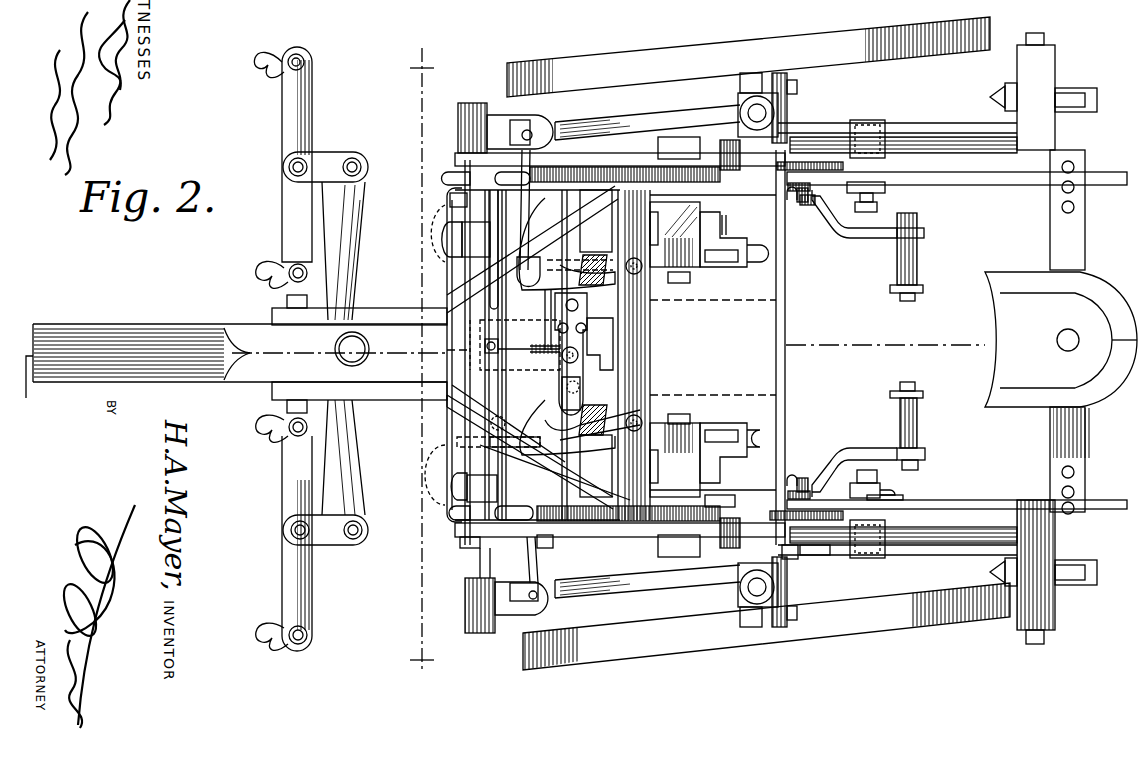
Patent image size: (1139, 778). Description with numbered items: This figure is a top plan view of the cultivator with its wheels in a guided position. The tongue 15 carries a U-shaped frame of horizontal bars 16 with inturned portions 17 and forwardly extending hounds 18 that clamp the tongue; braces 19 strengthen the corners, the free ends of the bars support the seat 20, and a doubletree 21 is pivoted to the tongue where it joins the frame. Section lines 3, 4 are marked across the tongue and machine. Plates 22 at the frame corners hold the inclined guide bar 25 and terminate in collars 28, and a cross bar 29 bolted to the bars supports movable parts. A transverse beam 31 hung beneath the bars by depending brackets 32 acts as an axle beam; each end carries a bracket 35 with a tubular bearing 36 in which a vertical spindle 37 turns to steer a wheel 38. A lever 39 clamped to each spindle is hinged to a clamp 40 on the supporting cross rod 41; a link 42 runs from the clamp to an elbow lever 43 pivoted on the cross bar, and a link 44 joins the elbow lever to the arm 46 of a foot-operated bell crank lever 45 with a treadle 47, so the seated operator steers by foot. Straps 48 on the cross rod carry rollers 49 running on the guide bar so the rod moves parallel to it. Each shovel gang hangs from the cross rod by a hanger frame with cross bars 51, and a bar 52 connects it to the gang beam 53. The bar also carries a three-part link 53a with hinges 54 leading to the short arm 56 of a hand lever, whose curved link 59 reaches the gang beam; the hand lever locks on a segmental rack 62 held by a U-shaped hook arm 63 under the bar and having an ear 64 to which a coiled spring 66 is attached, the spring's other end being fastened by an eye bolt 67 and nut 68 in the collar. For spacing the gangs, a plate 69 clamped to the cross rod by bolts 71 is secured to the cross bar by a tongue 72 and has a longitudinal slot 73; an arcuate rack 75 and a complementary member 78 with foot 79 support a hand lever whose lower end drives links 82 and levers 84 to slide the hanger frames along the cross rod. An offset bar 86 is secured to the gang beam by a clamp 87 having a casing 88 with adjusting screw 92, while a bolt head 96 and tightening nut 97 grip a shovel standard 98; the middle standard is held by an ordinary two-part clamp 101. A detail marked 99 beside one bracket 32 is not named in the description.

The section line 3 is at (26, 389).
The section line 4 is at (422, 360).
The tongue 15 is at (72, 332).
The horizontal bars 16 is at (1003, 180).
The inturned portions 17 is at (446, 214).
The hounds 18 is at (275, 322).
The braces 19 is at (380, 350).
The seat 20 is at (1061, 365).
The doubletree 21 is at (342, 296).
The plate 22 is at (455, 160).
The guide bar 25 is at (460, 433).
The collar 28 is at (450, 198).
The cross bar 29 is at (652, 378).
The transverse beam 31 is at (786, 352).
The depending brackets 32 is at (793, 556).
The bracket 35 is at (765, 612).
The vertical tubular bearing 36 is at (742, 108).
The vertical spindle 37 is at (775, 112).
The supporting wheels 38 is at (840, 36).
The lever 39 is at (637, 125).
The clamp 40 is at (478, 125).
The supporting cross rod 41 is at (495, 628).
The link 42 is at (535, 225).
The elbow lever 43 is at (545, 270).
The link 44 is at (670, 238).
The foot-operated bell crank lever 45 is at (825, 218).
The upwardly-extending arm 46 is at (800, 478).
The treadle 47 is at (918, 258).
The straps 48 is at (470, 250).
The rollers 49 is at (448, 238).
The cross bars 51 is at (540, 455).
The bar 52 is at (584, 246).
The gang beam 53 is at (955, 140).
The three-part link 53a is at (640, 538).
The hinges 54 is at (600, 537).
The short arm 56 is at (720, 165).
The curved link 59 is at (830, 132).
The segmental rack 62 is at (806, 178).
The U-shaped hook arm 63 is at (890, 186).
The ear 64 is at (718, 505).
The coiled spring 66 is at (545, 548).
The eye bolt 67 is at (505, 186).
The nut 68 is at (440, 178).
The plate 69 is at (470, 392).
The bolts 71 is at (485, 348).
The tongue 72 is at (650, 350).
The longitudinal slot 73 is at (612, 340).
The arcuate rack 75 is at (592, 370).
The complementary member 78 is at (590, 318).
The foot 79 is at (586, 297).
The links 82 is at (498, 348).
The levers 84 is at (510, 395).
The offset bar 86 is at (655, 284).
The clamp 87 is at (690, 280).
The elongated casing 88 is at (1045, 72).
The adjusting screw 92 is at (1040, 38).
The hollow rectangular head 96 is at (1090, 92).
The tightening nut 97 is at (1005, 94).
The standard 98 is at (1097, 100).
The bracket 99 is at (815, 555).
The two-part clamp 101 is at (887, 128).